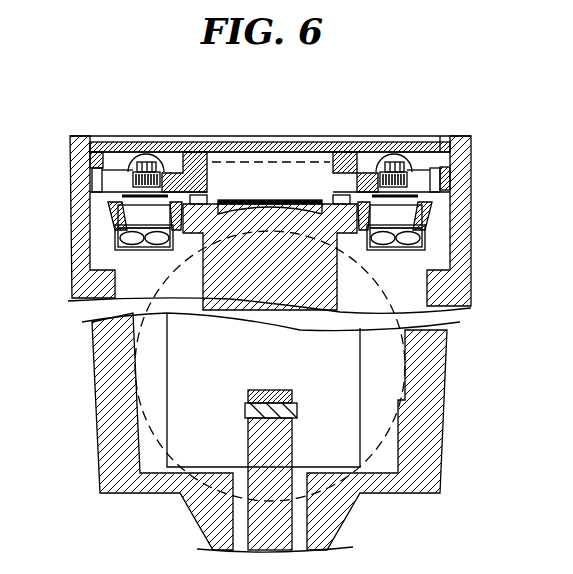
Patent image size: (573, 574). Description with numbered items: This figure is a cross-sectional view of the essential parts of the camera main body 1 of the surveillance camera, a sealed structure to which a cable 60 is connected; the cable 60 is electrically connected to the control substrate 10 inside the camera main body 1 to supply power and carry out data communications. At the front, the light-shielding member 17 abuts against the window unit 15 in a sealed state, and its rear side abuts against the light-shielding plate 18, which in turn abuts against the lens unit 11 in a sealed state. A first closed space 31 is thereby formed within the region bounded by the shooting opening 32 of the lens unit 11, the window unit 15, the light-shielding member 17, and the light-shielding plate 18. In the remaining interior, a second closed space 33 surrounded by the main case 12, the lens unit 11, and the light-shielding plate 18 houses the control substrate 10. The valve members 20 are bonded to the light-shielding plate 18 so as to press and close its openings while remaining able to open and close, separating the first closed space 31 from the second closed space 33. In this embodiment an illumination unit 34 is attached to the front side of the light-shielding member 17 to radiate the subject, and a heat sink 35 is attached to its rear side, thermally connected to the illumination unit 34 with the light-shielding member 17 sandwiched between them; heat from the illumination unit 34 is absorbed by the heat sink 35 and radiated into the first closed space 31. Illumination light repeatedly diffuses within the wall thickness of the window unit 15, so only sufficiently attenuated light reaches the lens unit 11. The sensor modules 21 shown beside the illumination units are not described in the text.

The camera main body 1 is at (460, 368).
The control substrate 10 is at (180, 435).
The lens unit 11 is at (117, 288).
The main case 12 is at (105, 389).
The window unit 15 is at (318, 146).
The light-shielding member 17 is at (194, 168).
The light-shielding plate 18 is at (110, 211).
The valve members 20 is at (104, 182).
The sensor module 21 is at (116, 242).
The first closed space 31 is at (287, 168).
The shooting opening 32 is at (255, 207).
The second closed space 33 is at (386, 397).
The illumination unit 34 is at (149, 160).
The heat sink 35 is at (134, 176).
The cable 60 is at (290, 530).